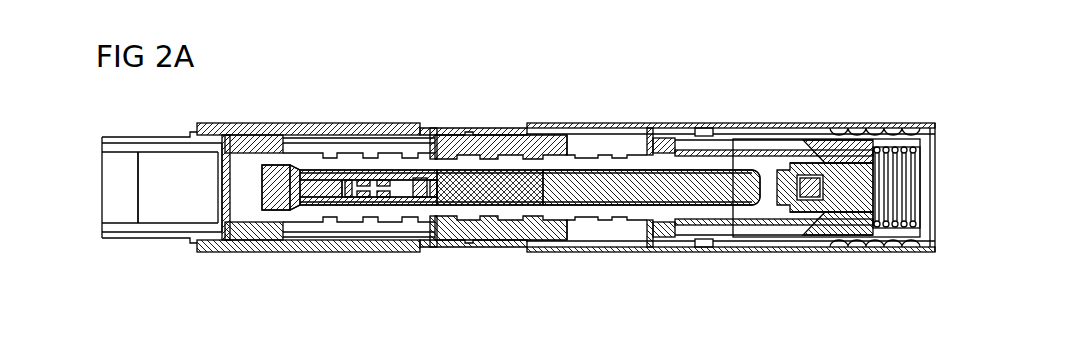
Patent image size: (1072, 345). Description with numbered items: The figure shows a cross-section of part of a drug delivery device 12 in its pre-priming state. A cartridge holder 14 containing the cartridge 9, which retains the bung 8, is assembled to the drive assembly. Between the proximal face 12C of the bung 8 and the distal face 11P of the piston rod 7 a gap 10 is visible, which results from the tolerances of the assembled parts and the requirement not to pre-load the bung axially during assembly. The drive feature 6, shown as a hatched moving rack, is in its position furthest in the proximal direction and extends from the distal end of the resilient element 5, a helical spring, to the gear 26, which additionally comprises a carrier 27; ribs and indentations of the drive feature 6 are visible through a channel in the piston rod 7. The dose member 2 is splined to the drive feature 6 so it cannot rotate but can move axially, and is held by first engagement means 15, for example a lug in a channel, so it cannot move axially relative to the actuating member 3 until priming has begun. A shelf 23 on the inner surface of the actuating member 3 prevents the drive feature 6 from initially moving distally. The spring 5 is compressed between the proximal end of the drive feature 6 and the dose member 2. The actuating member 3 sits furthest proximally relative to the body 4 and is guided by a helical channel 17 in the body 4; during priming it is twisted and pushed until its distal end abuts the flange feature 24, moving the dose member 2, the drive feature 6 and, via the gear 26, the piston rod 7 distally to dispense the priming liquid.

The dose member 2 is at (936, 160).
The actuating member 3 is at (818, 128).
The body 4 is at (370, 123).
The resilient element 5 is at (916, 210).
The drive feature 6 is at (594, 170).
The piston rod 7 is at (510, 211).
The bung 8 is at (160, 165).
The cartridge 9 is at (155, 233).
The gap 10 is at (245, 158).
The distal face of the piston rod 11P is at (248, 158).
The drug delivery device 12 is at (964, 257).
The proximal face of the bung 12C is at (214, 172).
The cartridge holder 14 is at (108, 239).
The first engagement means 15 is at (705, 128).
The channel 17 is at (470, 130).
The shelf 23 is at (650, 128).
The flange feature 24 is at (421, 127).
The gear 26 is at (377, 198).
The carrier 27 is at (445, 236).